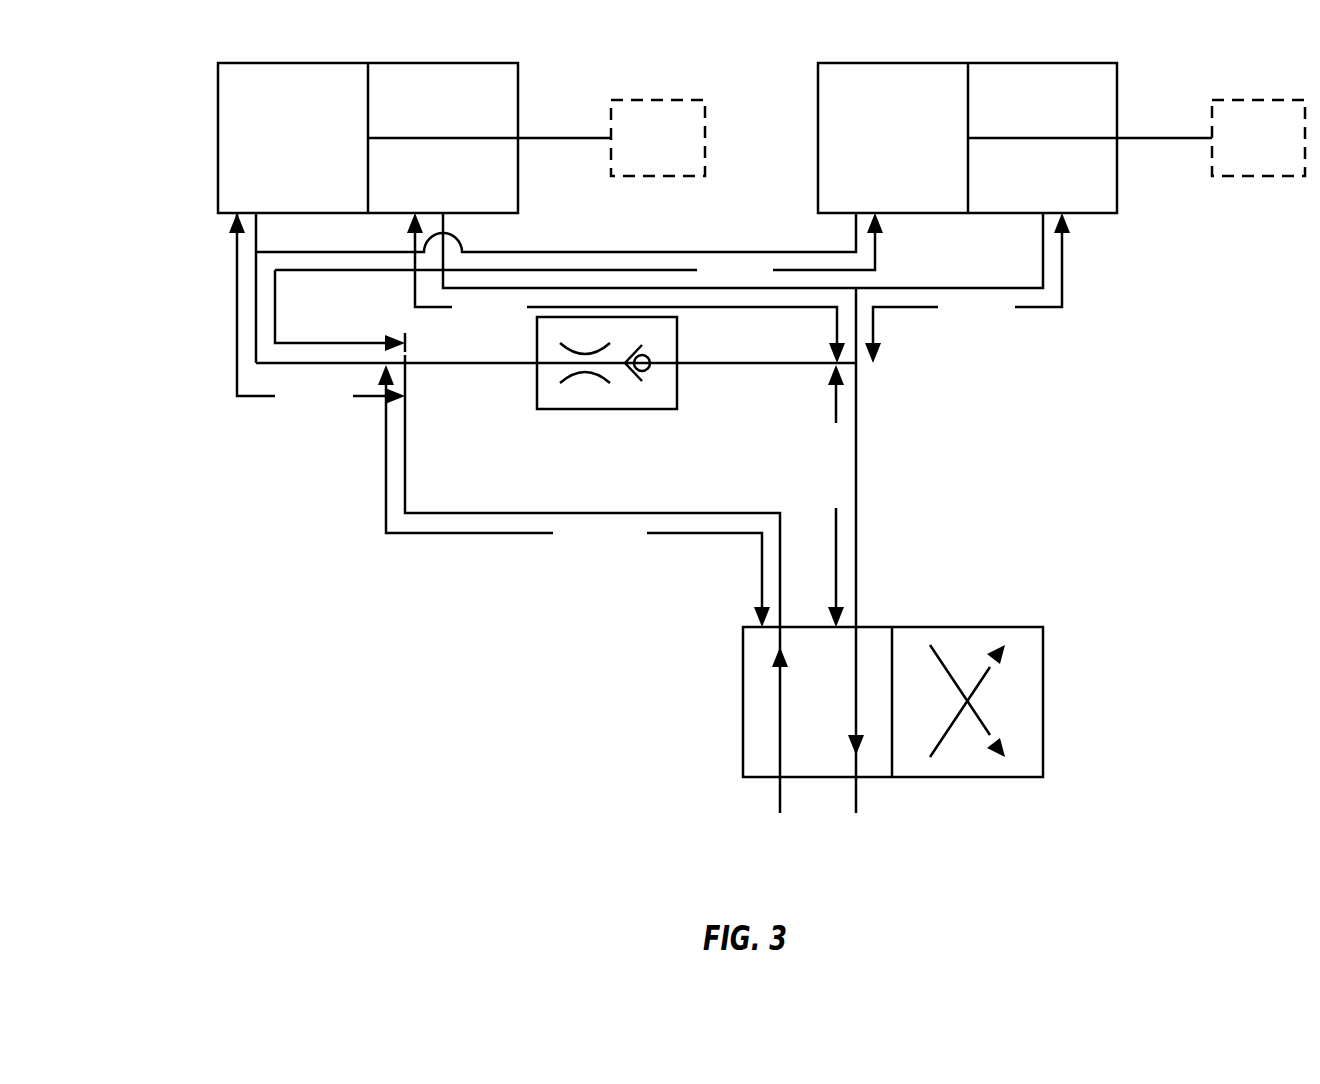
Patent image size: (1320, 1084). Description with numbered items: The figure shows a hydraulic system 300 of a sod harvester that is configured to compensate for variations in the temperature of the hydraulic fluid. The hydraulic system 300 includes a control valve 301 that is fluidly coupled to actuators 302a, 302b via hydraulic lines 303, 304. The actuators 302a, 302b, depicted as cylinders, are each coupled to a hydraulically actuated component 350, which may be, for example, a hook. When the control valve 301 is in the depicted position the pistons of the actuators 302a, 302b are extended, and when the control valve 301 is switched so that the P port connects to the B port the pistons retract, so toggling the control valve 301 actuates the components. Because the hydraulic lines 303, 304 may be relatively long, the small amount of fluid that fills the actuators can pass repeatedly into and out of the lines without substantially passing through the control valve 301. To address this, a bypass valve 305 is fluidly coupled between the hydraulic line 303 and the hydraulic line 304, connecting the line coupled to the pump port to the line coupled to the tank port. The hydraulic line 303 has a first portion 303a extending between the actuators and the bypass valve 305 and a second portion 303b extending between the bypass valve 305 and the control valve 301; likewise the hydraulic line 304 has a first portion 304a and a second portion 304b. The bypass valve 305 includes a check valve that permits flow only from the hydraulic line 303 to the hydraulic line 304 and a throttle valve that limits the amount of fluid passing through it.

The hydraulic system 300 is at (290, 630).
The control valve 301 is at (1012, 620).
The actuator 302a is at (216, 112).
The actuator 302b is at (816, 112).
The hydraulic line 303 is at (418, 483).
The first portion of hydraulic line 303 303a is at (556, 311).
The second portion of hydraulic line 303 303b is at (574, 496).
The hydraulic line 304 is at (872, 474).
The first portion of hydraulic line 304 304a is at (738, 288).
The second portion of hydraulic line 304 304b is at (846, 496).
The bypass valve 305 is at (660, 418).
The hydraulically actuated component 350 is at (677, 151).